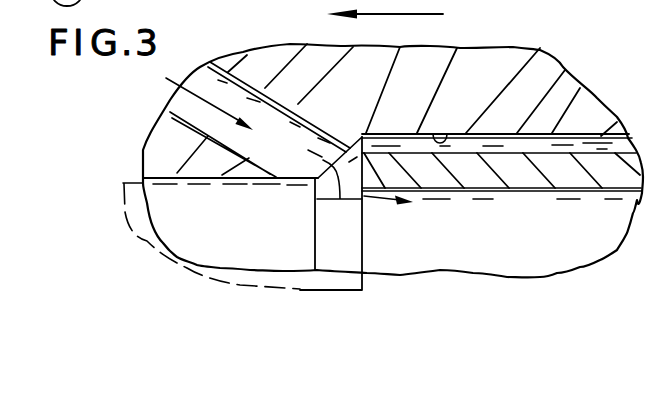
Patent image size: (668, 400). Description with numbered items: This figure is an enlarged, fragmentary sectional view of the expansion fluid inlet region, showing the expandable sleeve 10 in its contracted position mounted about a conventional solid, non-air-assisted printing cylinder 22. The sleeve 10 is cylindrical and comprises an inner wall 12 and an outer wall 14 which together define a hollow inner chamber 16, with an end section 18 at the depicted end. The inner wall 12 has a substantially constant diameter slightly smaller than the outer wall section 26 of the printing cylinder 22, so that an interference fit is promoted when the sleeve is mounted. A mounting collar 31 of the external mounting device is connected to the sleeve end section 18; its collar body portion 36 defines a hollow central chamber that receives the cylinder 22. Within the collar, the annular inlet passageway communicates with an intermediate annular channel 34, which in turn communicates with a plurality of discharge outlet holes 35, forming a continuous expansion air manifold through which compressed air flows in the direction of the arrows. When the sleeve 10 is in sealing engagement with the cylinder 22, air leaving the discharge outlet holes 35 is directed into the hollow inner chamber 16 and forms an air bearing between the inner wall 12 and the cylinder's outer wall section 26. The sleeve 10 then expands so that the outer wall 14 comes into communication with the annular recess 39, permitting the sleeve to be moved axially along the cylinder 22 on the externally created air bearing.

The expandable sleeve 10 is at (545, 160).
The inner wall 12 is at (530, 192).
The outer wall 14 is at (583, 135).
The hollow inner chamber 16 is at (460, 238).
The end section 18 is at (355, 237).
The printing cylinder 22 is at (117, 163).
The outer wall section 26 is at (173, 170).
The mounting collar 31 is at (540, 48).
The intermediate annular channel 34 is at (287, 153).
The discharge outlet holes 35 is at (340, 199).
The collar body portion 36 is at (446, 82).
The annular recess 39 is at (455, 133).